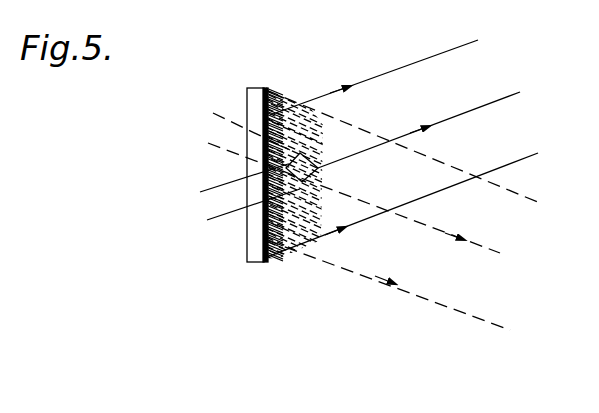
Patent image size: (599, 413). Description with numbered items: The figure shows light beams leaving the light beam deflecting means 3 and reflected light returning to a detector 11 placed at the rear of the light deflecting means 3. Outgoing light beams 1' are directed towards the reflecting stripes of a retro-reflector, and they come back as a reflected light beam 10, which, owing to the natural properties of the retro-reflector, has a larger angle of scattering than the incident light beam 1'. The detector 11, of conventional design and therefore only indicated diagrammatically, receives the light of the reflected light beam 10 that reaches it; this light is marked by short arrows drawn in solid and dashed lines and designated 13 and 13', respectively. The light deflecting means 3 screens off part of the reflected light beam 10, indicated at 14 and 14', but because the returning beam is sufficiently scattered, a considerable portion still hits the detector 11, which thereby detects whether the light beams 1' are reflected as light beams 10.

The detector 11 is at (255, 252).
The light from light beam hitting detector (solid-line arrows) 13 is at (296, 196).
The light from light beam hitting detector (dashed-line arrows) 13' is at (282, 85).
The light deflecting means 3 is at (309, 153).
The screened-off part of reflected light beam 14 is at (233, 192).
The screened-off part of reflected light beam 14' is at (241, 96).
The reflected light beam 10 is at (392, 70).
The light beam 1' is at (364, 161).